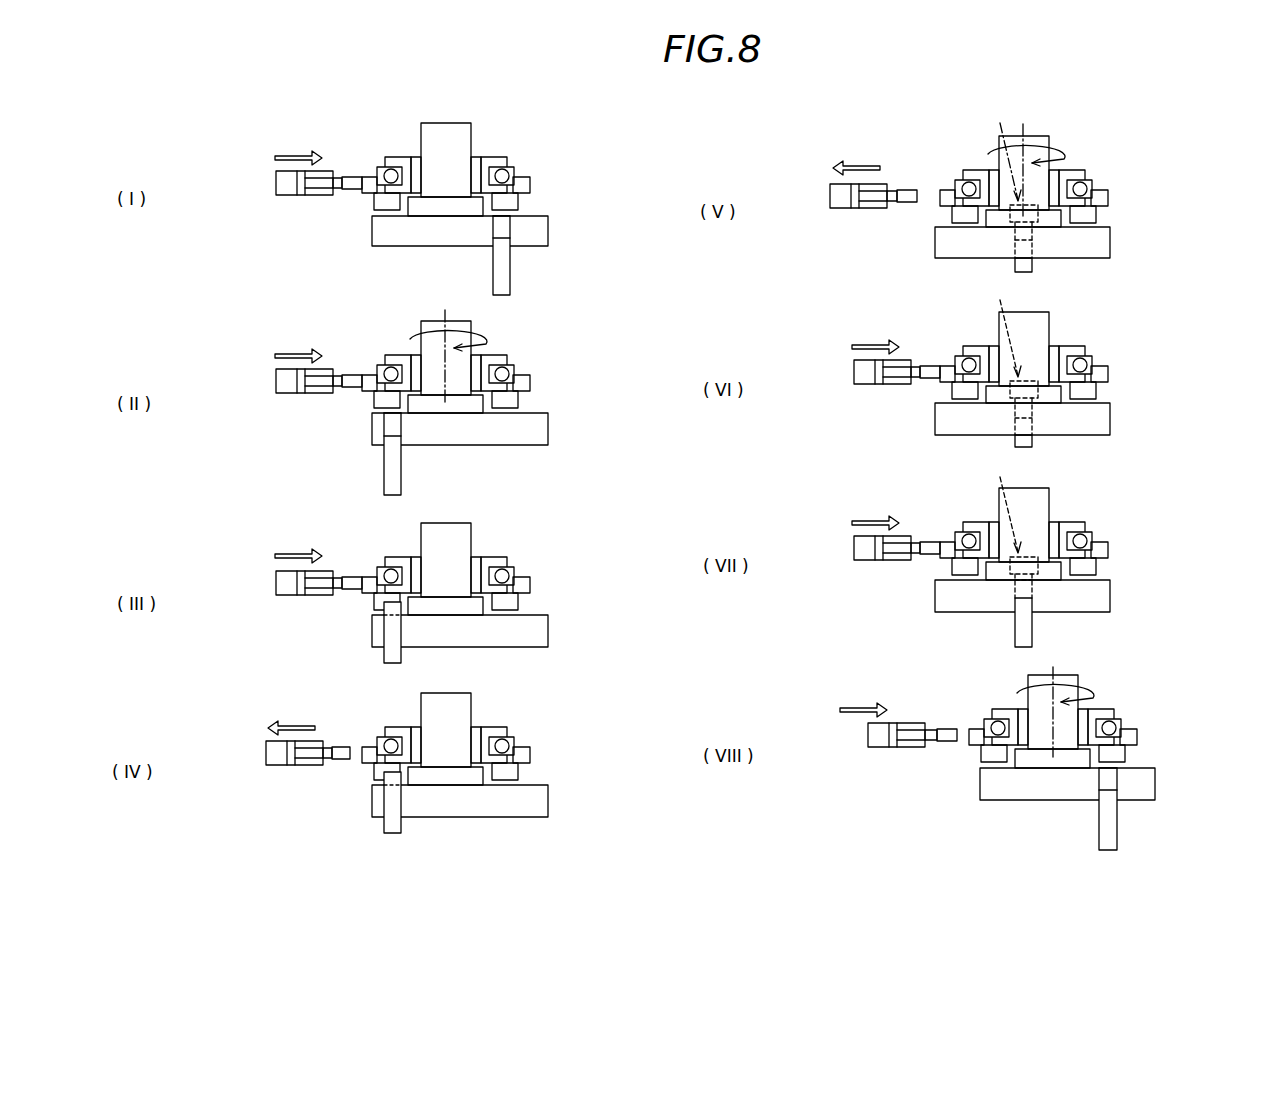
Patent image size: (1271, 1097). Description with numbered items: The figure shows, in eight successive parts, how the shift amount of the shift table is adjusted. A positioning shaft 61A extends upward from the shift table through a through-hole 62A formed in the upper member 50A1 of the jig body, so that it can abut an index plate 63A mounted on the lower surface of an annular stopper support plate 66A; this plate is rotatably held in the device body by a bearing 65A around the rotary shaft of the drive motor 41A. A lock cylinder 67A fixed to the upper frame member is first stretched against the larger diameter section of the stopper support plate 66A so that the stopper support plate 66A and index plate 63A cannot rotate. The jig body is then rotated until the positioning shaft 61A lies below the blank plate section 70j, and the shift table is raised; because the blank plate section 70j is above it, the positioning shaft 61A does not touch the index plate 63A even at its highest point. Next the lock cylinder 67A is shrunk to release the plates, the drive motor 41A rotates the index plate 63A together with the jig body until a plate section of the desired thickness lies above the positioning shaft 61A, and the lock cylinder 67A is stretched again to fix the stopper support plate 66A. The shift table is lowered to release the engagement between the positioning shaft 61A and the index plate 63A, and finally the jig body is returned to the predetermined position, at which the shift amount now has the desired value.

The drive motor 41A is at (463, 140).
The stopper support plate 66A is at (394, 167).
The bearing 65A is at (507, 175).
The index plate 63A is at (513, 203).
The through-hole 62A is at (503, 231).
The positioning shaft 61A is at (498, 274).
The upper member 50A1 is at (379, 227).
The lock cylinder 67A is at (279, 178).
The blank plate section 70j is at (377, 402).